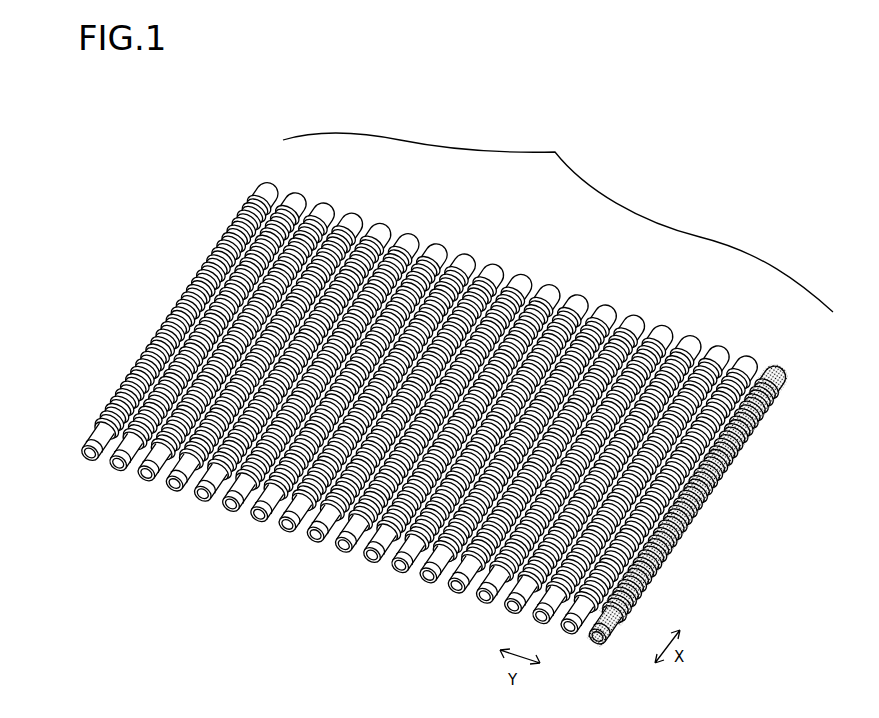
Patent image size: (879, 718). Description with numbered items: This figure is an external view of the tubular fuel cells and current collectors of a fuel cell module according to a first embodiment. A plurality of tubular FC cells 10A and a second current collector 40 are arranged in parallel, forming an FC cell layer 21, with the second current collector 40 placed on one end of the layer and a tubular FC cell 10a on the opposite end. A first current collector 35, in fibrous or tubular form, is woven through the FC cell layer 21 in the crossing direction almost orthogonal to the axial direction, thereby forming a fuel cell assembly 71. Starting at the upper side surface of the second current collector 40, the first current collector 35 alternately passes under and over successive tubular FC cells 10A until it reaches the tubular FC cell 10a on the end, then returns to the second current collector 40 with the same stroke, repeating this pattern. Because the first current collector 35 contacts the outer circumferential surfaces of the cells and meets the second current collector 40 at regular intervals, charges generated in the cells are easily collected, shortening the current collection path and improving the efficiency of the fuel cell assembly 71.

The fuel cell assembly 71 is at (466, 104).
The tubular FC cell 10A is at (336, 206).
The tubular FC cell on an end 10a is at (318, 167).
The first current collector 35 is at (100, 420).
The second current collector 40 is at (779, 371).
The FC cell layer 21 is at (558, 218).